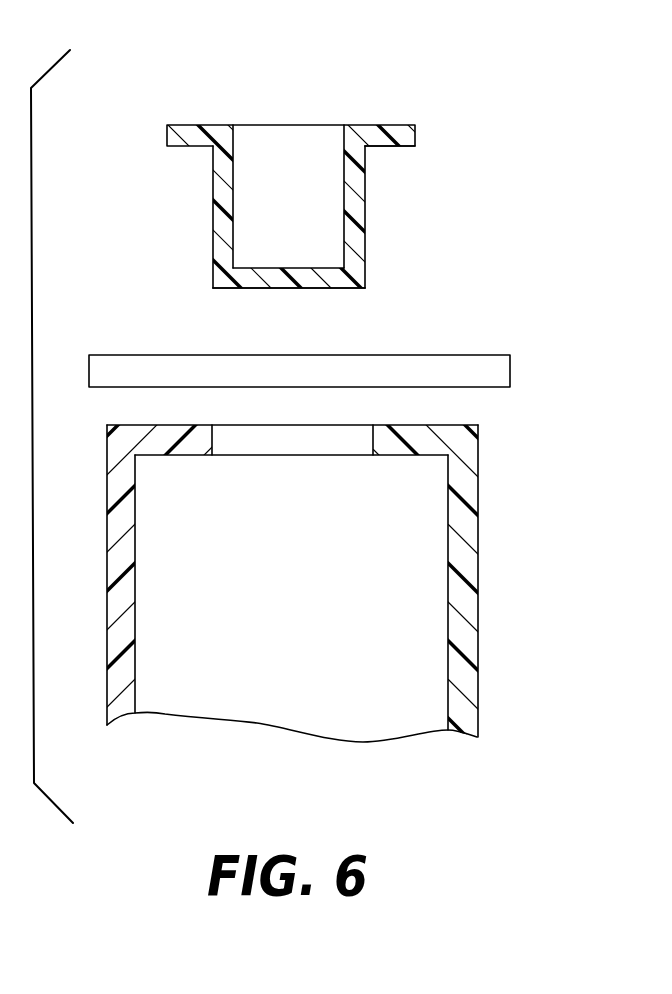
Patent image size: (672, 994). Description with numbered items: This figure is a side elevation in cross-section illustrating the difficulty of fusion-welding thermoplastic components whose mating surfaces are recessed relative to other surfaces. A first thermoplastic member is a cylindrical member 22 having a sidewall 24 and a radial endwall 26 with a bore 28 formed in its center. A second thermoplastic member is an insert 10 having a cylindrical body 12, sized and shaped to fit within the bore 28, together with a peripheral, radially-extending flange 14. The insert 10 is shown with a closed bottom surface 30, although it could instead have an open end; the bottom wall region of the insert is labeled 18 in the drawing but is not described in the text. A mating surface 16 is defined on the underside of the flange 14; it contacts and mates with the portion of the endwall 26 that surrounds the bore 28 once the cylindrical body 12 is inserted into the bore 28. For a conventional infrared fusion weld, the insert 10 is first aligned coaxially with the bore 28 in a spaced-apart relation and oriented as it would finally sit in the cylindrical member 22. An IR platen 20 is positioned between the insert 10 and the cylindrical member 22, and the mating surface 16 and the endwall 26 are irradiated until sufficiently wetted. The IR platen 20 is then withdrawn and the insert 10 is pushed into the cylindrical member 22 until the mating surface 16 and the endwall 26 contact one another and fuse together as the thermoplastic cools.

The insert 10 is at (458, 112).
The cylindrical body 12 is at (365, 216).
The flange 14 is at (413, 122).
The mating surface 16 is at (398, 146).
The cup bottom wall 18 is at (360, 288).
The closed bottom surface 30 is at (292, 288).
The IR platen 20 is at (523, 350).
The cylindrical member 22 is at (498, 474).
The sidewall 24 is at (478, 651).
The radial endwall 26 is at (418, 424).
The bore 28 is at (228, 447).